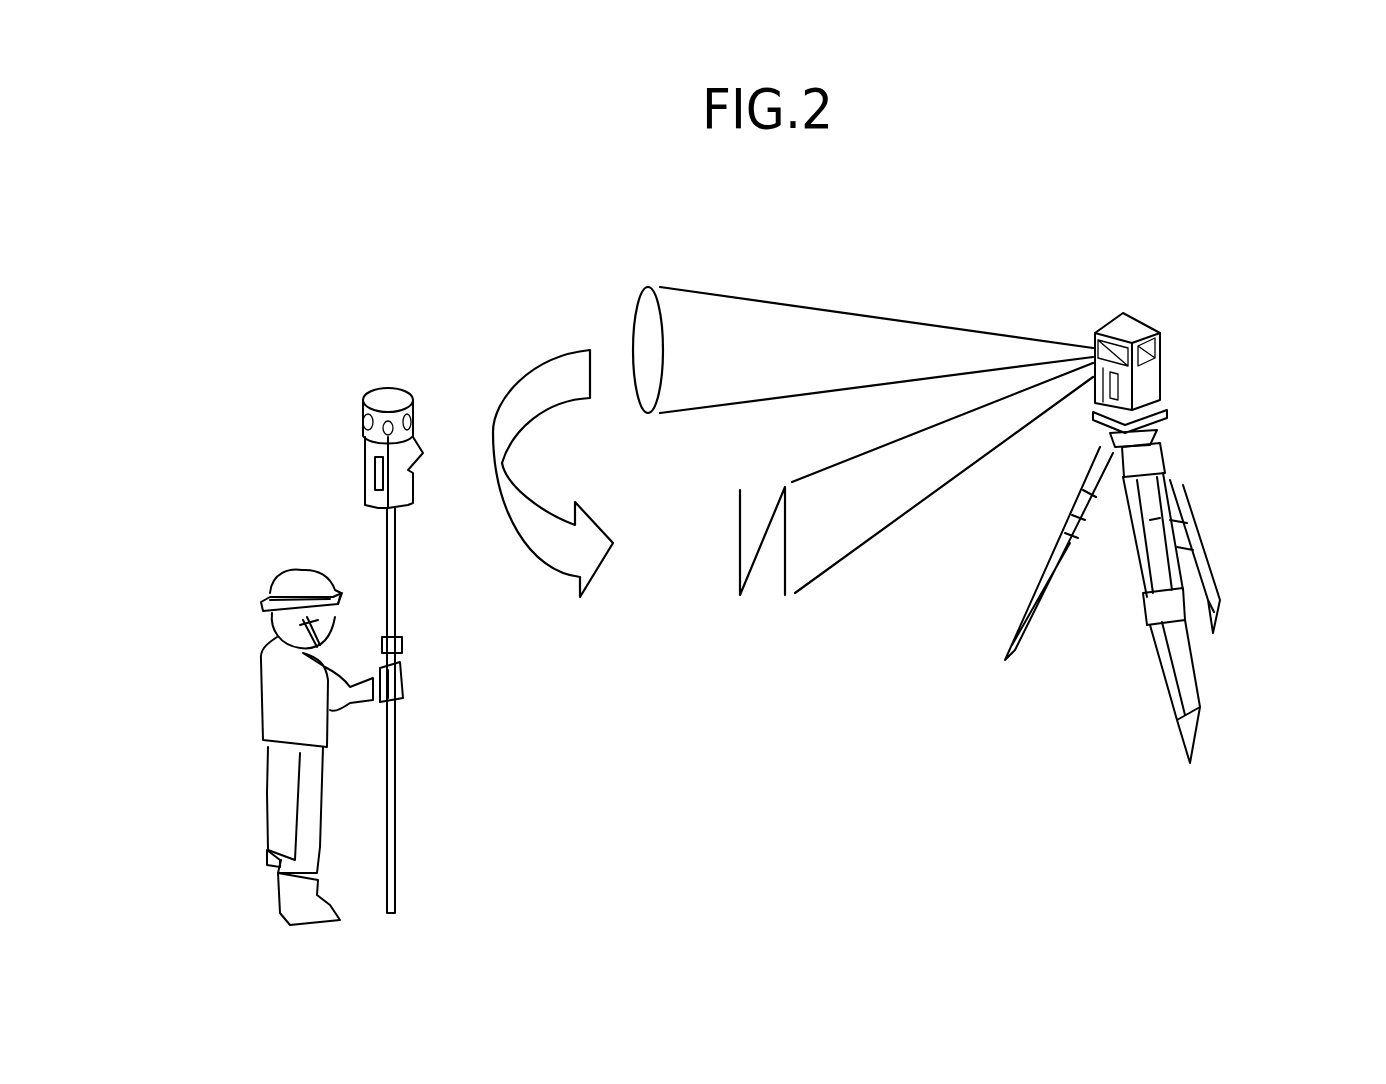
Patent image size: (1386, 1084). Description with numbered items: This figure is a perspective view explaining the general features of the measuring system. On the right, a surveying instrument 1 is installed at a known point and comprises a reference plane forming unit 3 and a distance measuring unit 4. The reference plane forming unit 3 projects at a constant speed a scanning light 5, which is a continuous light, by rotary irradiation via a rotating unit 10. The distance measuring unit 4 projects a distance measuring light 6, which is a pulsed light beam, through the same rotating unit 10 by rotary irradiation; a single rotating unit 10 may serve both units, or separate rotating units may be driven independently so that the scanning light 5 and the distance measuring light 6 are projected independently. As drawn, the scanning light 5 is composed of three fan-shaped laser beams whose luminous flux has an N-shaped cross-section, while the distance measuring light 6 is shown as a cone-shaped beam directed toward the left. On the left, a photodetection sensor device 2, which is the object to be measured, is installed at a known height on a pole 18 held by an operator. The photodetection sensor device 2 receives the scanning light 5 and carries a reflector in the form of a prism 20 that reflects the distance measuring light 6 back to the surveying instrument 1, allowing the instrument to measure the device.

The surveying instrument 1 is at (1146, 474).
The reference plane forming unit 3 is at (1162, 380).
The distance measuring unit 4 is at (1162, 338).
The rotating unit 10 is at (1095, 348).
The distance measuring light 6 is at (823, 310).
The scanning light 5 is at (875, 537).
The photodetection sensor device 2 is at (350, 409).
The prism 20 is at (422, 377).
The pole 18 is at (395, 792).